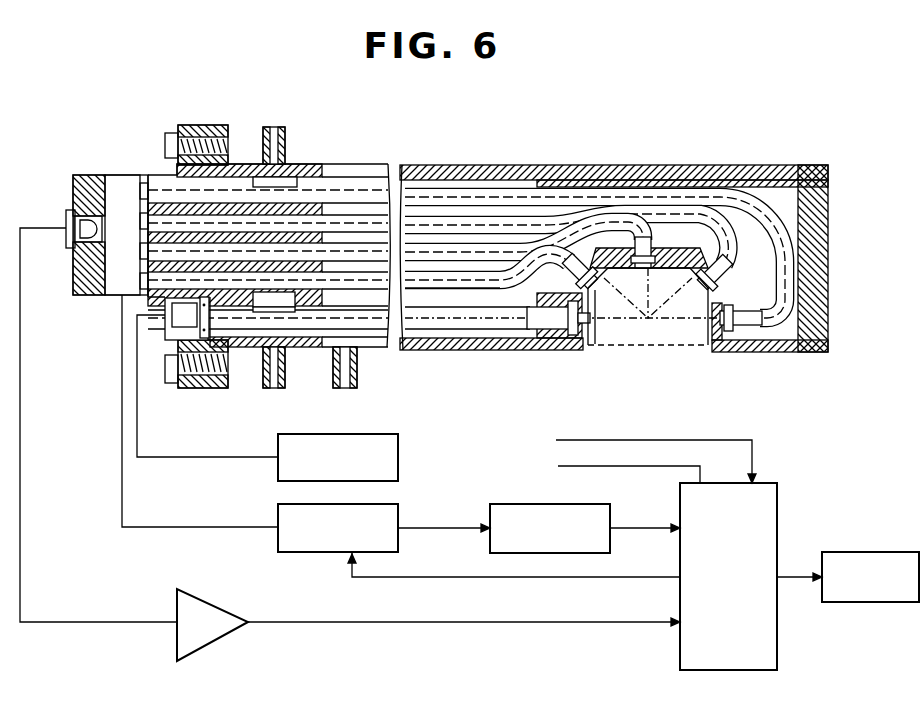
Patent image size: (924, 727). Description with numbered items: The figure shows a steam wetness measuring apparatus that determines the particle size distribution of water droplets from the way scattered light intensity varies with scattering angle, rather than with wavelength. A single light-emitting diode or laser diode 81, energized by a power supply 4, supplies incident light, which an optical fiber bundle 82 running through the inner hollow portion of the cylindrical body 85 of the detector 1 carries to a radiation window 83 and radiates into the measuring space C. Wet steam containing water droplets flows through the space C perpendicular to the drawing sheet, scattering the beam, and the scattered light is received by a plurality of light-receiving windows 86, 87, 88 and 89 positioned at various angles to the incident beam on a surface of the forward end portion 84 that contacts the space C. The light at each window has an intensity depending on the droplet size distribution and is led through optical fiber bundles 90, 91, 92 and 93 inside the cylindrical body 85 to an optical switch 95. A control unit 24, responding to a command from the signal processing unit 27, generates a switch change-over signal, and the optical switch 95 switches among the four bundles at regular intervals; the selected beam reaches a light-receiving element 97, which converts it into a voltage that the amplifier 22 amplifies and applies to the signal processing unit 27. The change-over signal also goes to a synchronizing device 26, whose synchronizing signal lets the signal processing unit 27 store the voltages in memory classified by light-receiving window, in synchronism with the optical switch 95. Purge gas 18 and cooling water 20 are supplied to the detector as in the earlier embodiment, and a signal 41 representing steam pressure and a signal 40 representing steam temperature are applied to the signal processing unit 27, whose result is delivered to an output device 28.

The detector 1 is at (489, 165).
The power supply 4 is at (398, 458).
The purge gas 18 is at (347, 388).
The cooling water 20 is at (275, 127).
The amplifier 22 is at (233, 616).
The control unit 24 is at (398, 513).
The synchronizing device 26 is at (531, 504).
The signal processing unit 27 is at (778, 496).
The output device 28 is at (871, 603).
The signal representing the temperature 40 is at (652, 440).
The signal representing the pressure 41 is at (645, 466).
The light-emitting diode or laser diode 81 is at (165, 316).
The optical fiber bundle 82 is at (449, 324).
The radiation window 83 is at (593, 333).
The forward end portion 84 is at (784, 340).
The cylindrical body 85 is at (537, 340).
The light-receiving window 86 is at (604, 276).
The light-receiving window 87 is at (648, 270).
The light-receiving window 88 is at (699, 298).
The light-receiving window 89 is at (710, 330).
The optical fiber bundle 90 is at (471, 283).
The optical fiber bundle 91 is at (420, 283).
The optical fiber bundle 92 is at (517, 216).
The optical fiber bundle 93 is at (432, 188).
The optical switch 95 is at (128, 175).
The light-receiving element 97 is at (69, 211).
The measuring space C is at (654, 346).